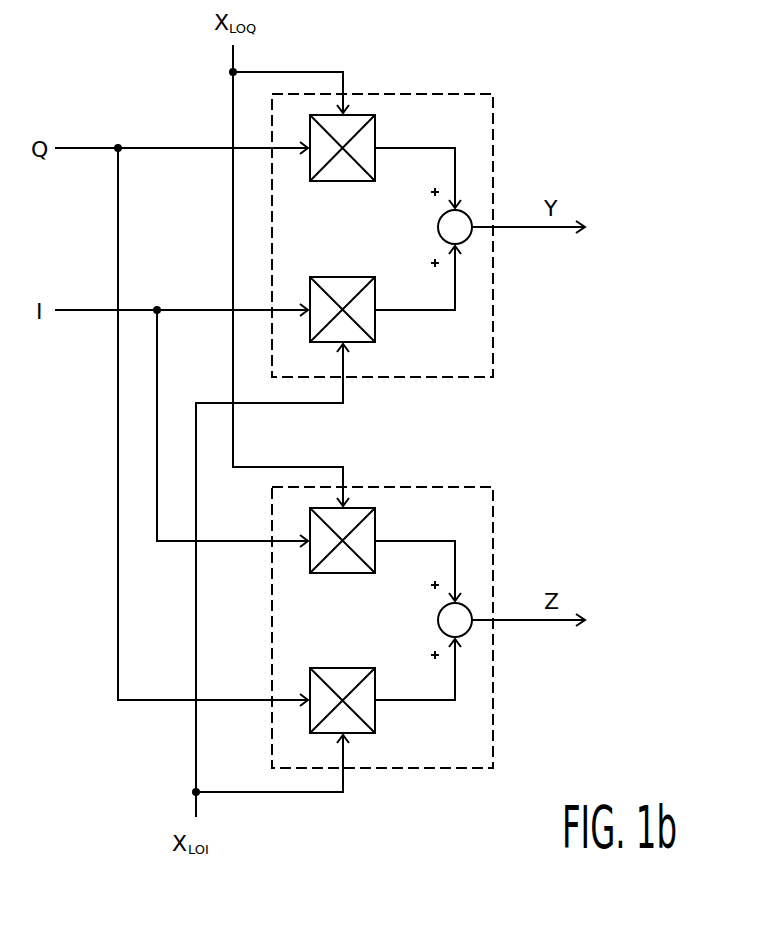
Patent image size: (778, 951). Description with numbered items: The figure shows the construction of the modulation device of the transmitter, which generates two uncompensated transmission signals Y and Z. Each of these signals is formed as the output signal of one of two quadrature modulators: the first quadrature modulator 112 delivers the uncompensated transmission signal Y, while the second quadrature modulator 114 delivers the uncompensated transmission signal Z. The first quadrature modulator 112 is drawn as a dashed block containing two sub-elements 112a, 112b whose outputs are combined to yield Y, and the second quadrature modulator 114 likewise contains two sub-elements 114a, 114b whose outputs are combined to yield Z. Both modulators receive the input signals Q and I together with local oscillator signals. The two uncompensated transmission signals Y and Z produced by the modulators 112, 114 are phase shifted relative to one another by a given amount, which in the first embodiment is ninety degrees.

The first quadrature modulator 112 is at (480, 148).
The multiplier mixing Q with X_LOQ 112a is at (363, 137).
The multiplier mixing I with X_LOI 112b is at (365, 315).
The second quadrature modulator 114 is at (473, 710).
The multiplier mixing I with X_LOQ 114a is at (365, 530).
The multiplier mixing Q with X_LOI 114b is at (363, 707).